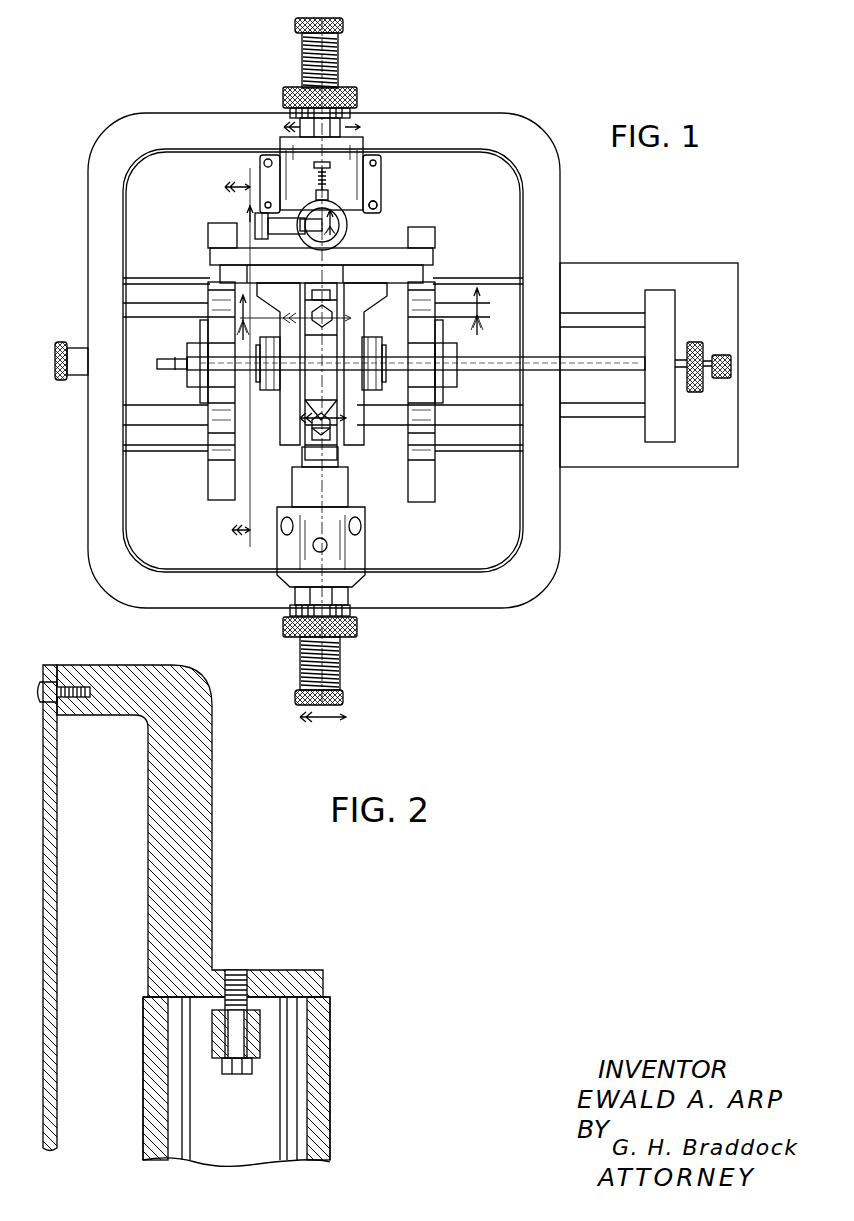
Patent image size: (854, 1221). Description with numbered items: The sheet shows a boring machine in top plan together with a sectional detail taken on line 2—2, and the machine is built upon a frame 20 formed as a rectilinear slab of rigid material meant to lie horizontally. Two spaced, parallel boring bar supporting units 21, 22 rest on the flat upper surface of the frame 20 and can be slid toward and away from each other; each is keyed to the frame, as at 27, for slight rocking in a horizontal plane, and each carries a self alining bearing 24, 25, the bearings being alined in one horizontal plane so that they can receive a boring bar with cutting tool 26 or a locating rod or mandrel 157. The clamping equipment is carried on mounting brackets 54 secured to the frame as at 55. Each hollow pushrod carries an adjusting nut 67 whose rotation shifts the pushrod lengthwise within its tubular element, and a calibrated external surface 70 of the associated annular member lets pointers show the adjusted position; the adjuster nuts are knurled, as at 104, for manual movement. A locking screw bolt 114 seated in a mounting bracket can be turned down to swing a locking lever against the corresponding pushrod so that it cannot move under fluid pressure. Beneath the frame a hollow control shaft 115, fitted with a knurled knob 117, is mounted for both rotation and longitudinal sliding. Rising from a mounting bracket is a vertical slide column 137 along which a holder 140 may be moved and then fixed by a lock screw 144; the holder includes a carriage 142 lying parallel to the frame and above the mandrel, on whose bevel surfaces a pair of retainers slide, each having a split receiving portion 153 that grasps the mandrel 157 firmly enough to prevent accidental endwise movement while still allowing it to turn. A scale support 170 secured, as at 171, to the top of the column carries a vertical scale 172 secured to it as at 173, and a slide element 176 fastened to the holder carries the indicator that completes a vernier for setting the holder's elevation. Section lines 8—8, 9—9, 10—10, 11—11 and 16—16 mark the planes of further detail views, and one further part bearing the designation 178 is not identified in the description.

In FIG. 1, the frame 20 is at (483, 520).
In FIG. 1, the knurling 104 is at (355, 697).
In FIG. 1, the adjusting nut 67 is at (370, 630).
In FIG. 1, the calibrated external surface 70 is at (295, 610).
In FIG. 1, the section line 10- 10 is at (336, 128).
In FIG. 1, the mounting bracket 54 is at (400, 548).
In FIG. 1, the bracket fastening 55 is at (378, 205).
In FIG. 1, the lock screw 144 is at (318, 166).
In FIG. 1, the vertical slide column 137 is at (347, 227).
In FIG. 1, the slide element 176 is at (270, 232).
In FIG. 1, the section line 2- 2 is at (284, 216).
In FIG. 1, the section line 9- 9 is at (223, 357).
In FIG. 1, the carriage 142 is at (412, 250).
In FIG. 1, the holder 140 is at (321, 263).
In FIG. 1, the central column 178 is at (322, 371).
In FIG. 1, the section line 16- 16 is at (295, 326).
In FIG. 1, the section line 11- 11 is at (308, 570).
In FIG. 1, the section line 8- 8 is at (365, 322).
In FIG. 1, the boring bar with cutting tool 26 is at (590, 372).
In FIG. 1, the key 27 is at (162, 368).
In FIG. 1, the knurled knob 117 is at (61, 342).
In FIG. 1, the hollow control shaft 115 is at (78, 376).
In FIG. 1, the boring bar supporting unit 22 is at (215, 482).
In FIG. 1, the self alining bearing 25 is at (192, 345).
In FIG. 1, the locating rod or mandrel 157 is at (175, 372).
In FIG. 1, the boring bar supporting unit 21 is at (430, 478).
In FIG. 1, the self alining bearing 24 is at (448, 383).
In FIG. 1, the locating rod or mandrel receiving portion 153 is at (384, 430).
In FIG. 1, the locking screw bolt 114 is at (336, 532).
In FIG. 2, the vertical scale 172 is at (57, 1025).
In FIG. 2, the scale support 170 is at (200, 848).
In FIG. 2, the scale fastening 173 is at (50, 690).
In FIG. 2, the support fastening 171 is at (238, 1040).